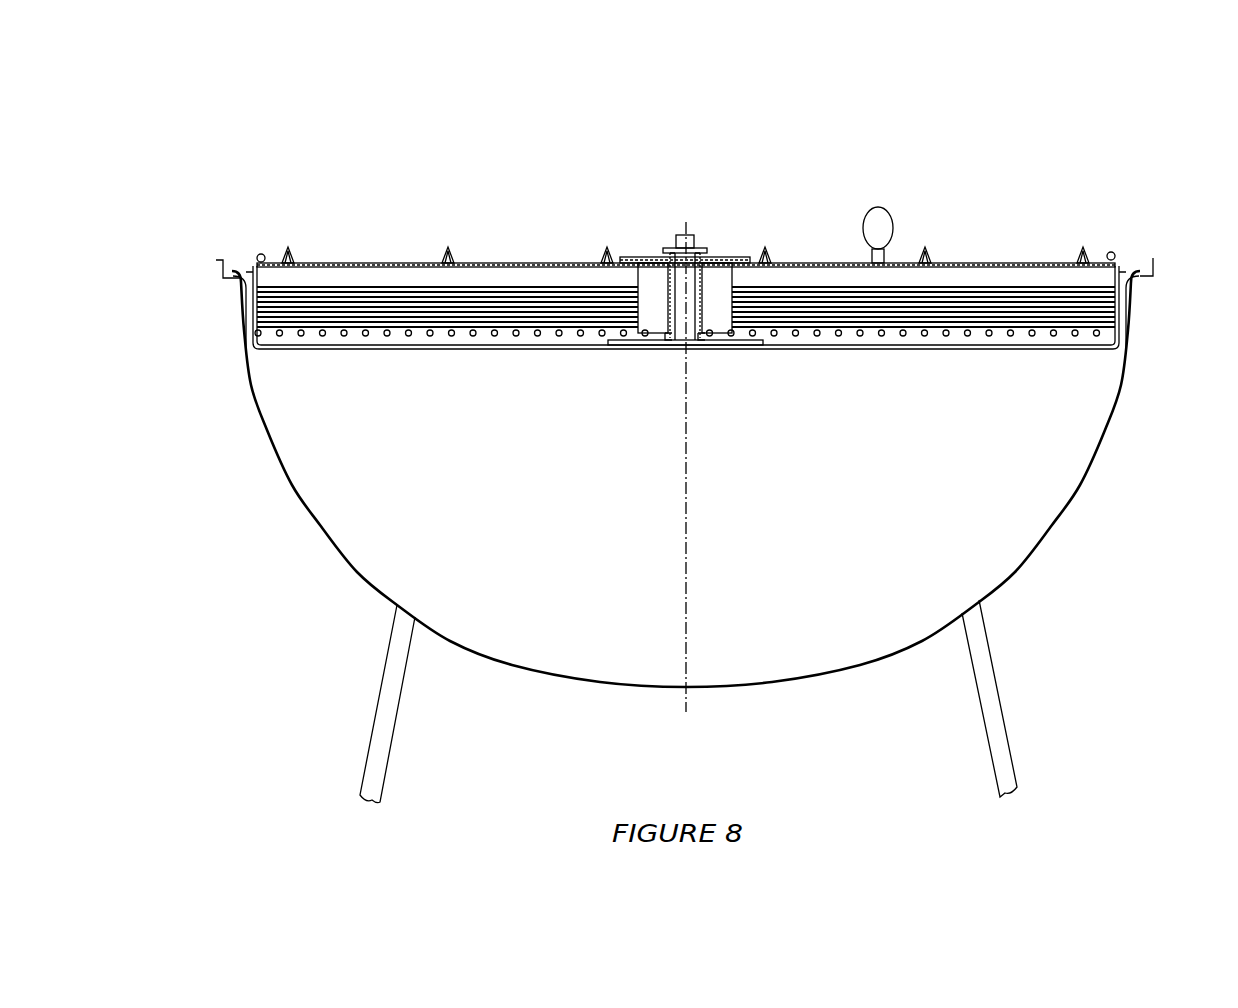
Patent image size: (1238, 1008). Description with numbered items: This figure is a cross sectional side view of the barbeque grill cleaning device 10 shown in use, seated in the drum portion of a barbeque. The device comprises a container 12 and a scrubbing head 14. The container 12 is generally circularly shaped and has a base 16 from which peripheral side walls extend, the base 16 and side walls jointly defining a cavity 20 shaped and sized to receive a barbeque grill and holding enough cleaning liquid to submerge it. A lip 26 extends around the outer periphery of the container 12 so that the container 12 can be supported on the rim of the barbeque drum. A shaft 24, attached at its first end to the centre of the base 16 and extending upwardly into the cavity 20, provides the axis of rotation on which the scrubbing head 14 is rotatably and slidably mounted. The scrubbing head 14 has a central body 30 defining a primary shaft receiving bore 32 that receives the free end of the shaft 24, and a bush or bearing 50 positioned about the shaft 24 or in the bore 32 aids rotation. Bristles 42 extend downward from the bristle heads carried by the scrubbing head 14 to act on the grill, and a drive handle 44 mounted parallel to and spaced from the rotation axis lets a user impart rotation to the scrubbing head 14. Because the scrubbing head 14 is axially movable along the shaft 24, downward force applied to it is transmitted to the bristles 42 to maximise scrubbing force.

The barbeque grill cleaning device 10 is at (393, 152).
The container 12 is at (1128, 308).
The scrubbing head 14 is at (523, 262).
The base 16 is at (467, 348).
The cavity 20 is at (248, 308).
The shaft 24 is at (703, 322).
The lip 26 is at (227, 282).
The central body 30 is at (710, 255).
The primary shaft receiving bore 32 is at (668, 343).
The bristles 42 is at (910, 303).
The drive handle 44 is at (885, 222).
The bush or bearing 50 is at (662, 255).